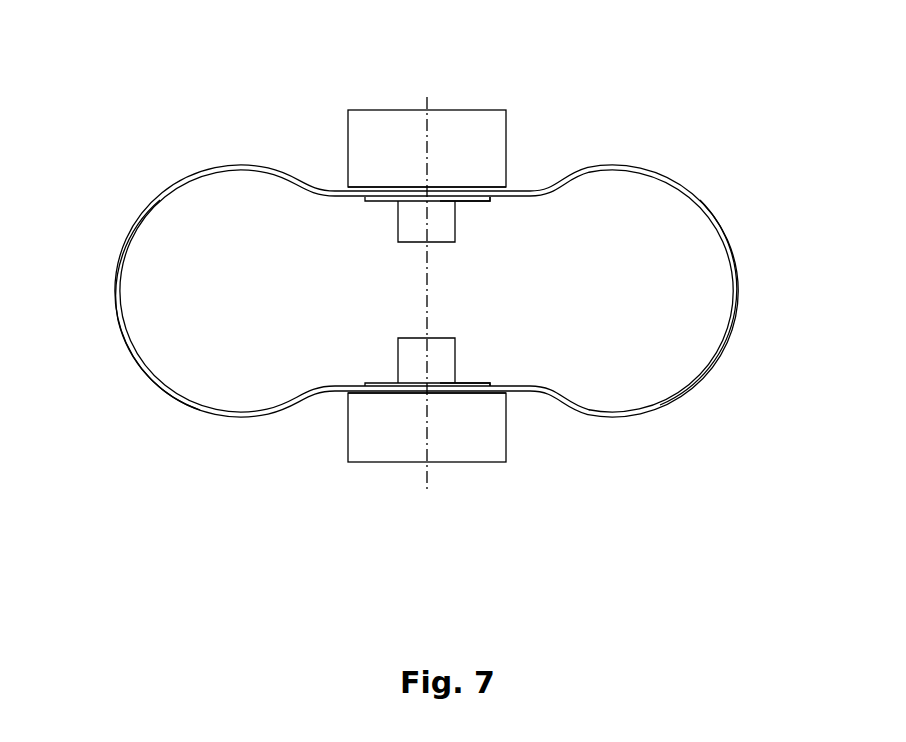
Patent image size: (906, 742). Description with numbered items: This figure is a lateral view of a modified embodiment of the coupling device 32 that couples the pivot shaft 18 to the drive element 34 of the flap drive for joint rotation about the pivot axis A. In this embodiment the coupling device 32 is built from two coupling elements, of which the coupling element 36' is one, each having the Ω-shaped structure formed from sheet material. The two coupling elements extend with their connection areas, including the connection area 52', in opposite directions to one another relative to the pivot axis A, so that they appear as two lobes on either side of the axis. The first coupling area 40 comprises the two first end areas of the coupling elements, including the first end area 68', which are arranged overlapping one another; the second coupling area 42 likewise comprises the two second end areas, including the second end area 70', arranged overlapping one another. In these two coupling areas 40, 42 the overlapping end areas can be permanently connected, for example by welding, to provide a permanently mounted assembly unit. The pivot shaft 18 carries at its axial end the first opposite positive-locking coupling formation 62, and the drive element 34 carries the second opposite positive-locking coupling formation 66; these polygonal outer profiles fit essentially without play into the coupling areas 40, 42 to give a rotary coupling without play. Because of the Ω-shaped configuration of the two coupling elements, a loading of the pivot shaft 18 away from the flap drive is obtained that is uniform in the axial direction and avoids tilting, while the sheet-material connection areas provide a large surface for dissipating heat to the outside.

The pivot shaft 18 is at (478, 462).
The coupling device 32 is at (656, 446).
The drive element 34 is at (457, 110).
The first coupling element 36' is at (141, 424).
The first coupling area 40 is at (380, 436).
The second coupling area 42 is at (478, 164).
The connection area 52' is at (110, 260).
The first opposite positive-locking coupling formation 62 is at (366, 352).
The second opposite positive-locking coupling formation 66 is at (488, 227).
The first end area 68' is at (383, 428).
The second end area 70' is at (410, 232).
The pivot axis A is at (427, 443).